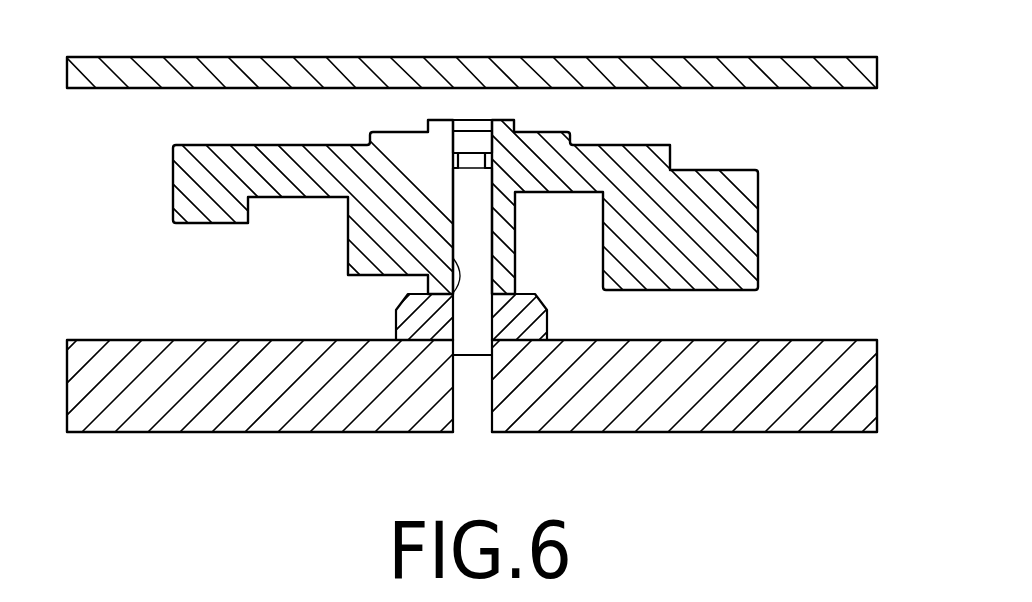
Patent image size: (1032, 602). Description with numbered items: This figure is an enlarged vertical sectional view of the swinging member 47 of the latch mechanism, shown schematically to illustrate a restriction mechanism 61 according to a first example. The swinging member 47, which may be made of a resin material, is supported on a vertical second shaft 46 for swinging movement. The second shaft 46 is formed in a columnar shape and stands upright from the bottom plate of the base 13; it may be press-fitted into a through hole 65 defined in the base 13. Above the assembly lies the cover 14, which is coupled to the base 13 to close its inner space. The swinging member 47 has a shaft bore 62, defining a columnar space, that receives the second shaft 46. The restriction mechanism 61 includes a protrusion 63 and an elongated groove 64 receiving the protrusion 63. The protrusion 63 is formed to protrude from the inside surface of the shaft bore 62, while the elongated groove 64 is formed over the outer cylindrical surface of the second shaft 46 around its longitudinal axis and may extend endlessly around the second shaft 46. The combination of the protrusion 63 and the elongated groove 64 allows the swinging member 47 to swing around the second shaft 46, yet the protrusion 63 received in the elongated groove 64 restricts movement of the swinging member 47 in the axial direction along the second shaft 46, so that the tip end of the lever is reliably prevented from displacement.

The base 13 is at (816, 340).
The cover 14 is at (818, 57).
The second shaft 46 is at (485, 119).
The swinging member 47 is at (758, 192).
The restriction mechanism 61 is at (495, 151).
The shaft bore 62 is at (408, 295).
The protrusion 63 is at (481, 172).
The elongated groove 64 is at (449, 157).
The through hole 65 is at (490, 413).